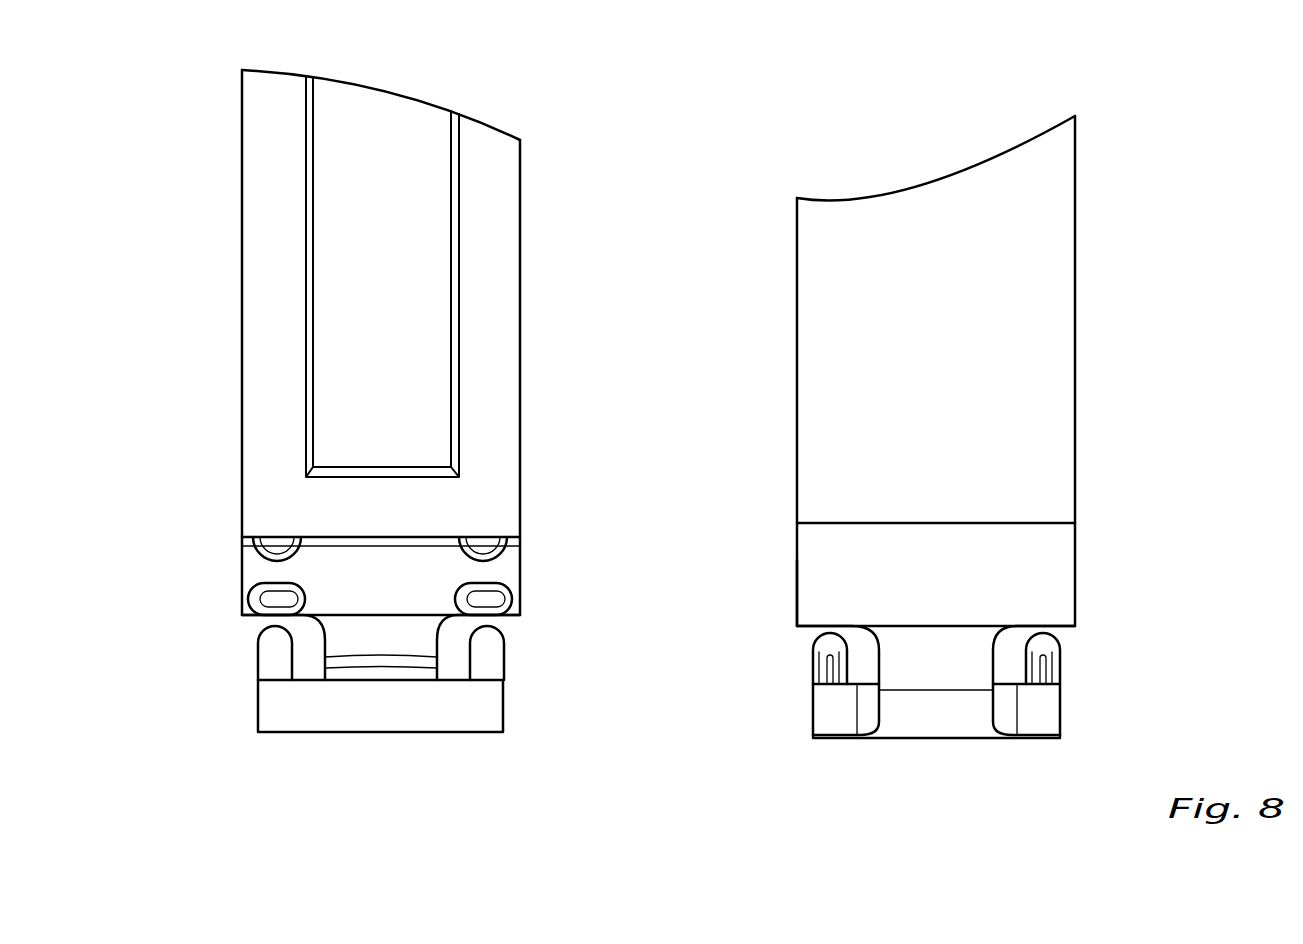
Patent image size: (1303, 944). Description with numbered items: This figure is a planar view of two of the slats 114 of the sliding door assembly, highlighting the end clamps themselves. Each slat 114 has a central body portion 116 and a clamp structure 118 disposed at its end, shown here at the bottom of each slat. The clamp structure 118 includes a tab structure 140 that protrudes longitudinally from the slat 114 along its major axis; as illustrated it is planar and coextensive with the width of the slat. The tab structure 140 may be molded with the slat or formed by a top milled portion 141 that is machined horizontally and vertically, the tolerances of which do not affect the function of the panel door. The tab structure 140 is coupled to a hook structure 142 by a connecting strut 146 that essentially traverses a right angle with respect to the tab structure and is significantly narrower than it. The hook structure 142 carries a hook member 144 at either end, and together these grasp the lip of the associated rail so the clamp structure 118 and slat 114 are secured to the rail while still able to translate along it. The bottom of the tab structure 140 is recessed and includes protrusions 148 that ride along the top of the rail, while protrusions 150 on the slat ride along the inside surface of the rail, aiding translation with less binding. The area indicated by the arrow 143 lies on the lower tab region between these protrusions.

The slat 114 is at (488, 128).
The central body portion 116 is at (488, 247).
The clamp structure 118 is at (367, 755).
The tab structure 140 is at (522, 573).
The top milled portion 141 is at (833, 580).
The hook structure 142 is at (258, 732).
The wall strip 143 is at (250, 567).
The hook member 144 is at (507, 662).
The connecting strut 146 is at (440, 640).
The protrusion 148 is at (260, 607).
The protrusion 150 is at (267, 542).